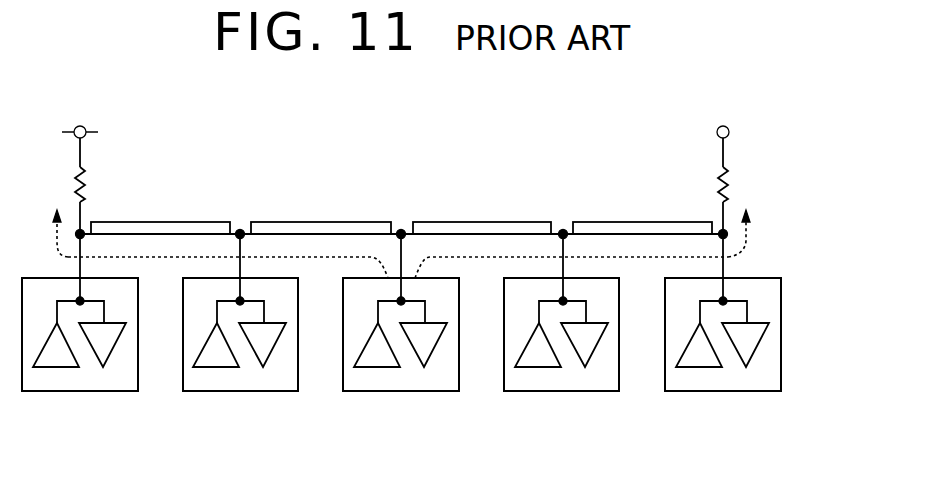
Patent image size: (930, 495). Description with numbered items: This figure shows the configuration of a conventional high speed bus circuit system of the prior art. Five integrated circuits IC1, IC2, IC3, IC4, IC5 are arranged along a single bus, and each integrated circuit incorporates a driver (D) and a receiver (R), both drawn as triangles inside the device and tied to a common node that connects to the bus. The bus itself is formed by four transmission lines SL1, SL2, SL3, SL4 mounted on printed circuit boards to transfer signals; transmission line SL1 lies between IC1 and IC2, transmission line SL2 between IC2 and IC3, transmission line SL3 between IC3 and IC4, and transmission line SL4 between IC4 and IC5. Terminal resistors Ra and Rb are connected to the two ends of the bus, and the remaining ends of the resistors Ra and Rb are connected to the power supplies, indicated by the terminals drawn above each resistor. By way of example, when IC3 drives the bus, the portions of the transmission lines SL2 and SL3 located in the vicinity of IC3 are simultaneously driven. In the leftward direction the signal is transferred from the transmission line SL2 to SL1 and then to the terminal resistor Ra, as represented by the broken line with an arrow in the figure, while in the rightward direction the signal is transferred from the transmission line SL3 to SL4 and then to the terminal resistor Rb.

The terminal resistor Ra is at (69, 213).
The terminal resistor Rb is at (739, 213).
The transmission line SL1 is at (141, 222).
The transmission line SL2 is at (302, 222).
The transmission line SL3 is at (463, 222).
The transmission line SL4 is at (623, 222).
The integrated circuit IC1 is at (80, 392).
The integrated circuit IC2 is at (240, 392).
The integrated circuit IC3 is at (401, 392).
The integrated circuit IC4 is at (562, 392).
The integrated circuit IC5 is at (723, 392).